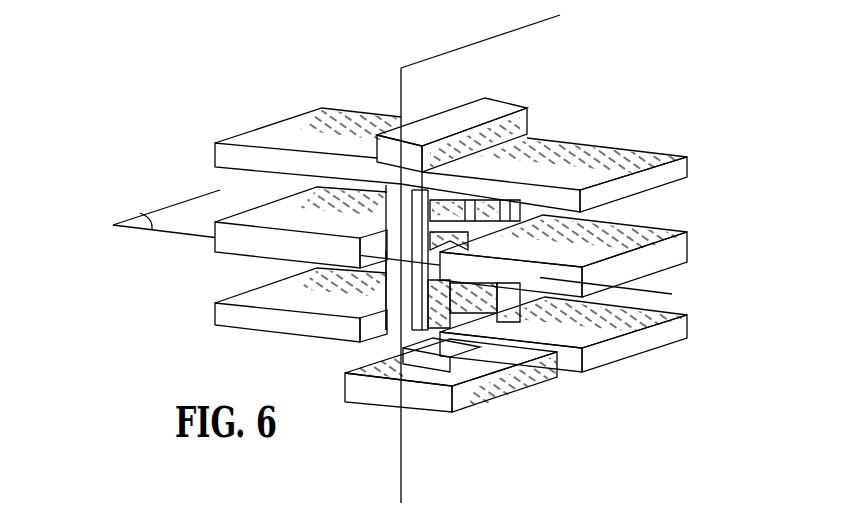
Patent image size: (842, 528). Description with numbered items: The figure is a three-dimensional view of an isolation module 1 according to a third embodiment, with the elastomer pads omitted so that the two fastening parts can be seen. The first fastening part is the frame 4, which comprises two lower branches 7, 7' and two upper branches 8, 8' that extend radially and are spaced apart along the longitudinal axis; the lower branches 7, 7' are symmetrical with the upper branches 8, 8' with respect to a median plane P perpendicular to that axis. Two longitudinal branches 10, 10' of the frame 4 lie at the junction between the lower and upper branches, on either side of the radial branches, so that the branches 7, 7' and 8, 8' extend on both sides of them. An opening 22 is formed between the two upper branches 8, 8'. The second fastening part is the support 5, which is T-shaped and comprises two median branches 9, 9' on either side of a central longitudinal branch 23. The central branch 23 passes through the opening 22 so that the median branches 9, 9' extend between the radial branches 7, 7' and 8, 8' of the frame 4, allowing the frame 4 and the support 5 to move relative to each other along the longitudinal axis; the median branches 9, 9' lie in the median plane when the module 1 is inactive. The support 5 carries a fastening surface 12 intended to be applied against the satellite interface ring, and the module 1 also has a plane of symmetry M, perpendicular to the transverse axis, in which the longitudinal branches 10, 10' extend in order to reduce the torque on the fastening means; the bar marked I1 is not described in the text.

The isolation module 1 is at (162, 186).
The frame 4 is at (615, 133).
The support 5 is at (552, 402).
The lower branch 7 is at (563, 348).
The lower branch 7' is at (301, 326).
The upper branch 8 is at (562, 162).
The upper branch 8' is at (293, 135).
The median branch 9 is at (575, 246).
The median branch 9' is at (282, 243).
The longitudinal branch 10 is at (507, 153).
The longitudinal branch 10' is at (348, 324).
The fastening surface 12 is at (380, 409).
The opening 22 is at (503, 308).
The central longitudinal branch 23 is at (463, 308).
The plane of symmetry M is at (412, 77).
The median plane P is at (138, 220).
The insert bar I1 is at (491, 106).